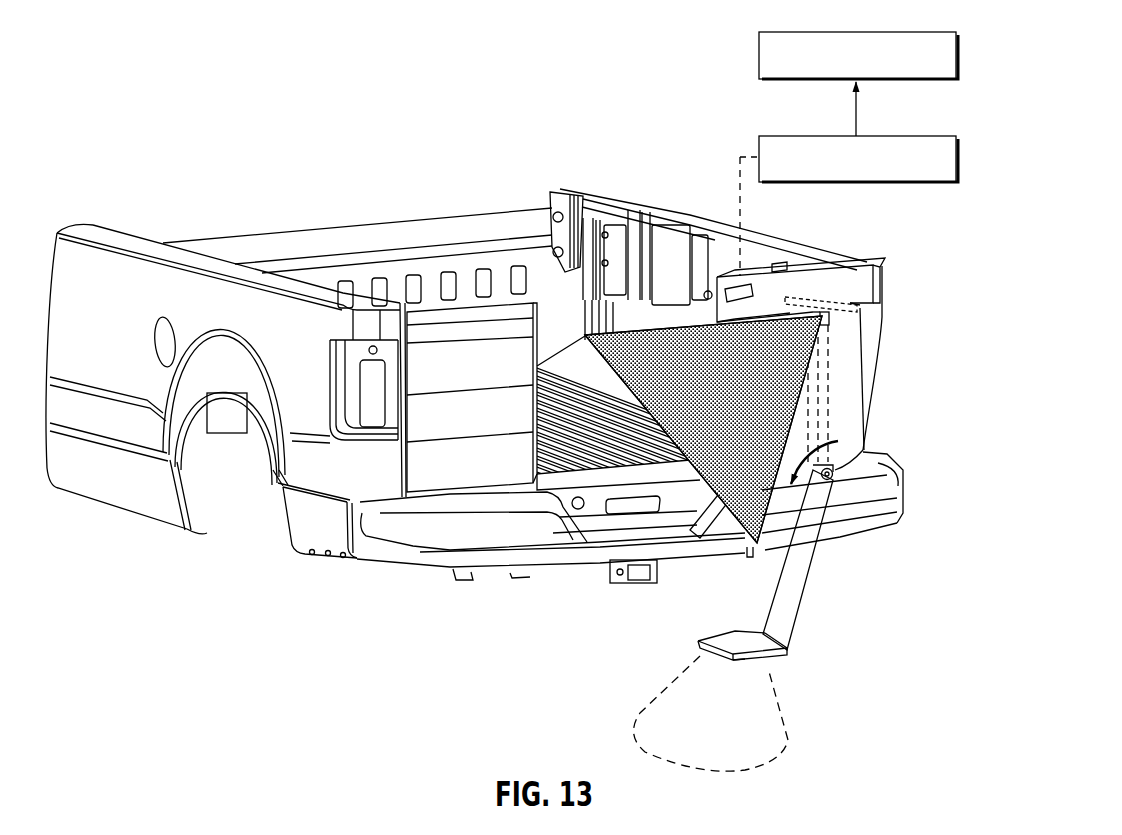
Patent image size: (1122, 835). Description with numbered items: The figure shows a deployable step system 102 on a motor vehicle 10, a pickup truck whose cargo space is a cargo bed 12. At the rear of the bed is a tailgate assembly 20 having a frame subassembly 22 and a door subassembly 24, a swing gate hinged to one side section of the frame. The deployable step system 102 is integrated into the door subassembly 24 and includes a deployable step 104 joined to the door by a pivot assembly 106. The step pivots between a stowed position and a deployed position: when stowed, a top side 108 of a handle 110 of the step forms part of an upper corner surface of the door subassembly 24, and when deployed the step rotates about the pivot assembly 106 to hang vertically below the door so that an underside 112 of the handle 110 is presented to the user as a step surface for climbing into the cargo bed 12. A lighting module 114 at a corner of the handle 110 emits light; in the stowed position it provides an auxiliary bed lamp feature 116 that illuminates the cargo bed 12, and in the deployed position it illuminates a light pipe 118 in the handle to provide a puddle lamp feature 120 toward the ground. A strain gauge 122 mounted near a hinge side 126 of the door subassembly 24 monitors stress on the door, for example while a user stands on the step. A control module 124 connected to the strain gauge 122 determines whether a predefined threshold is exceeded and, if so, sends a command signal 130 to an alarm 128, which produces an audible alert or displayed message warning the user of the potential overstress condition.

The motor vehicle 10 is at (670, 126).
The cargo bed 12 is at (572, 360).
The tailgate assembly 20 is at (858, 267).
The frame subassembly 22 is at (456, 320).
The door subassembly 24 is at (751, 276).
The deployable step system 102 is at (829, 537).
The deployable step 104 is at (785, 595).
The pivot assembly 106 is at (830, 477).
The top side 108 is at (822, 300).
The handle 110 is at (852, 288).
The underside 112 is at (733, 638).
The lighting module 114 is at (848, 302).
The auxiliary bed lamp feature 116 is at (641, 332).
The light pipe 118 is at (755, 659).
The puddle lamp feature 120 is at (787, 732).
The strain gauge 122 is at (743, 290).
The control module 124 is at (887, 136).
The hinge side 126 is at (710, 305).
The alarm 128 is at (887, 32).
The command signal 130 is at (856, 100).